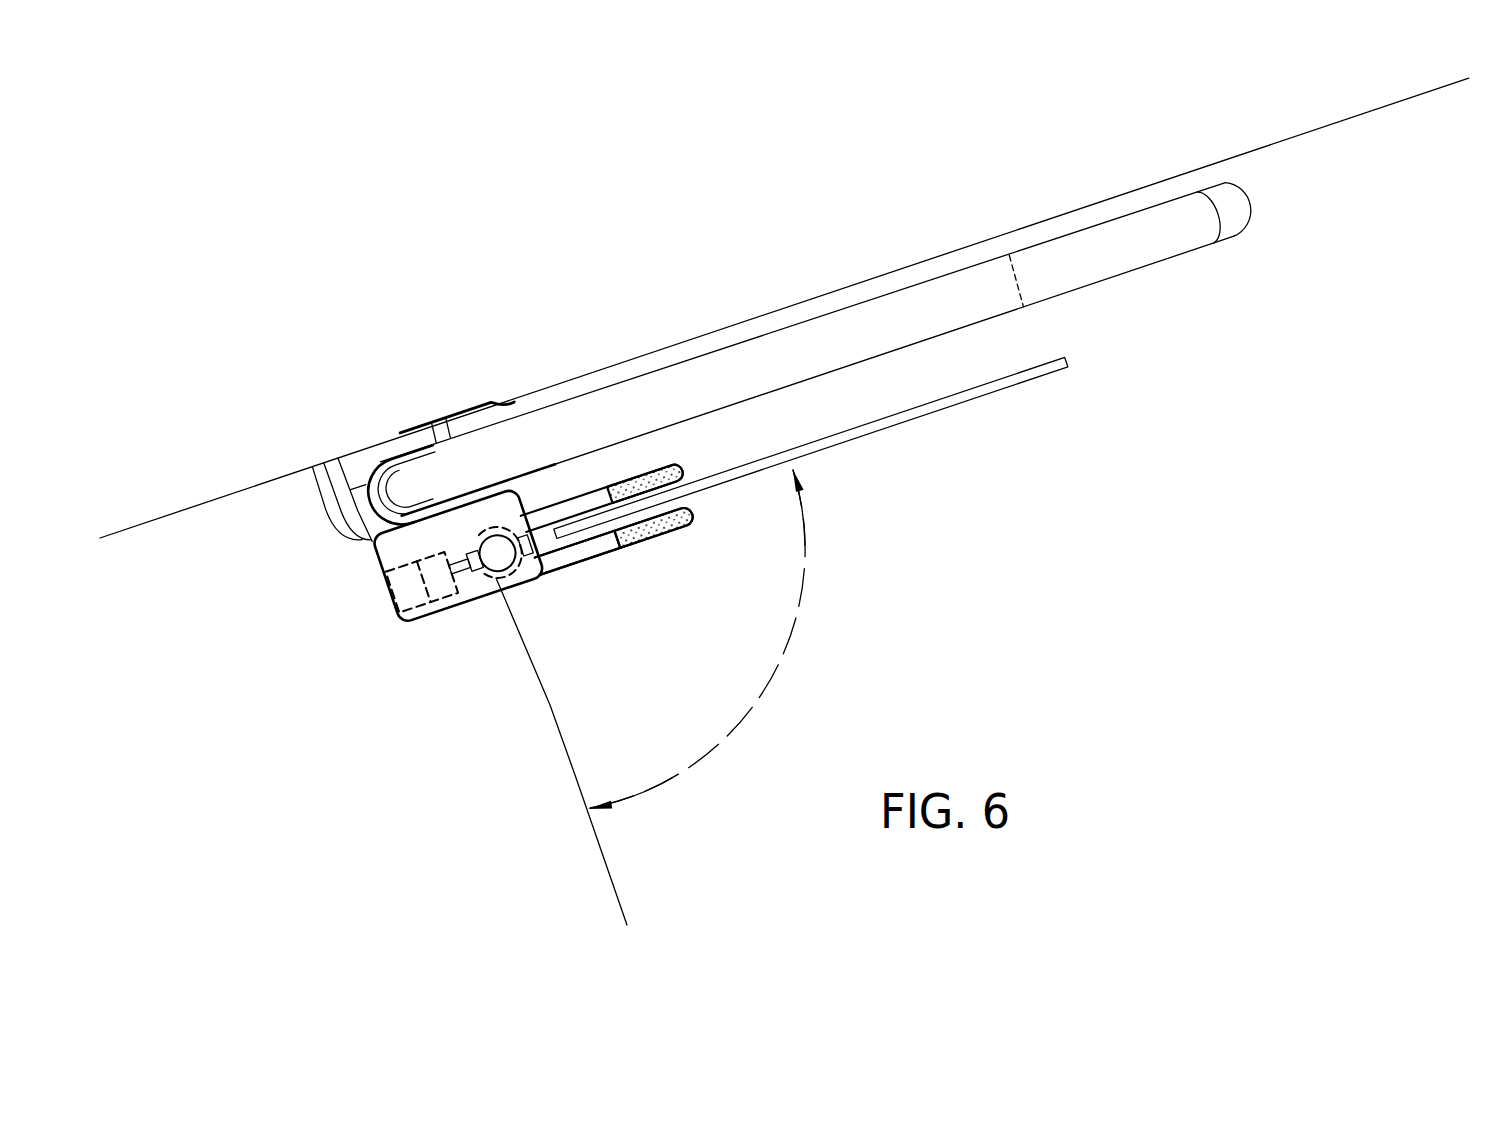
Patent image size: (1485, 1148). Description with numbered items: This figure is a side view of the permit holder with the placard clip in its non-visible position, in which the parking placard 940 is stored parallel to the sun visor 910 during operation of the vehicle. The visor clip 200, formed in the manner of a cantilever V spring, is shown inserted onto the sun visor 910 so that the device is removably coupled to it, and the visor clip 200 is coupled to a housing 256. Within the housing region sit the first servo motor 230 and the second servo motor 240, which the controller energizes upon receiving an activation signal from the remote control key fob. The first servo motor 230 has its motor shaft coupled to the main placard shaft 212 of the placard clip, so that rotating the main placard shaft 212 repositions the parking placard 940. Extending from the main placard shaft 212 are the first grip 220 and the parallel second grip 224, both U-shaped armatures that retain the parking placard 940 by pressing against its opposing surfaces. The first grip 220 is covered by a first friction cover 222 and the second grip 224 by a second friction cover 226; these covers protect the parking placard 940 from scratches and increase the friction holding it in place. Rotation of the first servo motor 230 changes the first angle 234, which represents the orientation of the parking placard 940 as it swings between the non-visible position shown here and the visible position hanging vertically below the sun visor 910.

The sun visor 910 is at (914, 320).
The parking placard 940 is at (978, 402).
The visor clip 200 is at (488, 425).
The first grip 220 is at (558, 513).
The first friction cover 222 is at (680, 468).
The second grip 224 is at (587, 557).
The second friction cover 226 is at (690, 520).
The first servo motor 230 is at (482, 548).
The second servo motor 240 is at (442, 597).
The main placard shaft 212 is at (498, 572).
The housing 256 is at (499, 570).
The first angle 234 is at (662, 697).